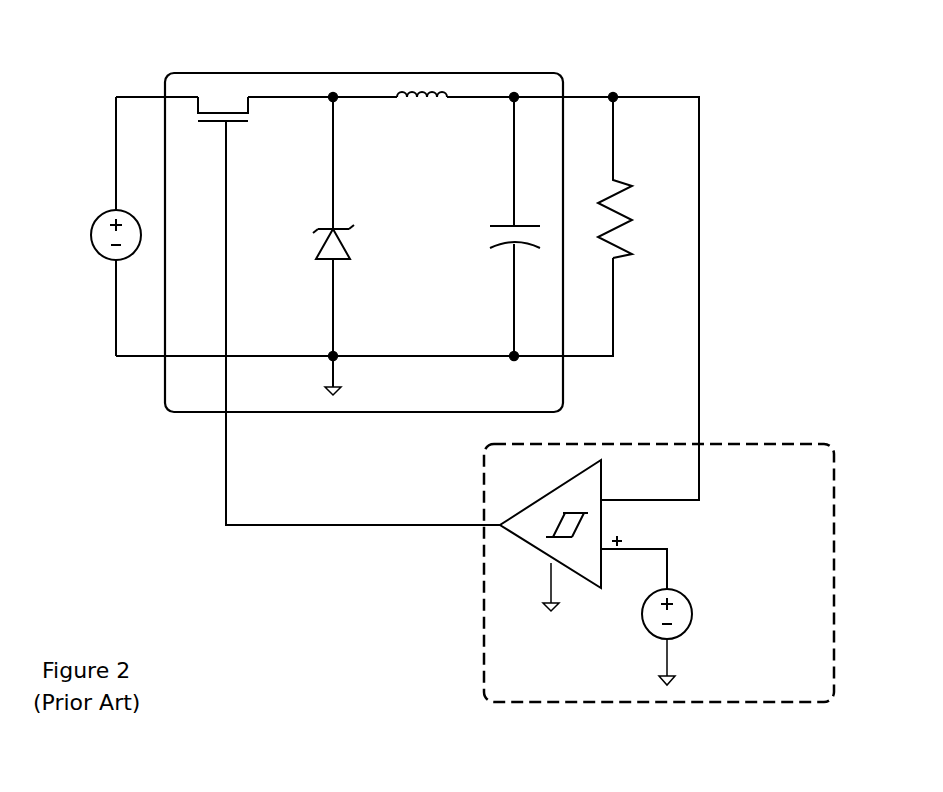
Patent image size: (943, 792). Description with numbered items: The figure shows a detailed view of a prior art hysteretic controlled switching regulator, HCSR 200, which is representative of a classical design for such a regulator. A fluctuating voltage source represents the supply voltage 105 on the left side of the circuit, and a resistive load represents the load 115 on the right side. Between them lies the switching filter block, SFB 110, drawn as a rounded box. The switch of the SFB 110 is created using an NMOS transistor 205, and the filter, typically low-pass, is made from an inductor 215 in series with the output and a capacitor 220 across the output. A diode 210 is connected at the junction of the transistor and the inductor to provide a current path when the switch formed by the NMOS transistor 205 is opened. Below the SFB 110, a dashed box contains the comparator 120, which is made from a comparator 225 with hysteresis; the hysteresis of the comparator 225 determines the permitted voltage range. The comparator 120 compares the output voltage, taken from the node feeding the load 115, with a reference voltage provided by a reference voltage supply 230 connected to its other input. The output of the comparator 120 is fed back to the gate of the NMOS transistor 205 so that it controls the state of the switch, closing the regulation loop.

The hysteretic controlled switching regulator 200 is at (697, 57).
The switching filter block 110 is at (295, 73).
The NMOS transistor 205 is at (236, 132).
The diode 210 is at (348, 220).
The inductor 215 is at (420, 104).
The capacitor 220 is at (503, 220).
The load 115 is at (626, 178).
The supply voltage 105 is at (105, 262).
The comparator 120 is at (728, 444).
The comparator with hysteresis 225 is at (558, 484).
The reference voltage supply 230 is at (652, 641).